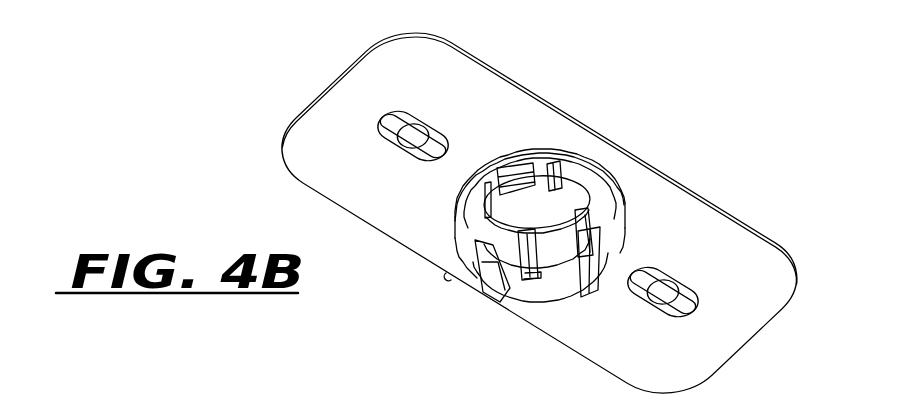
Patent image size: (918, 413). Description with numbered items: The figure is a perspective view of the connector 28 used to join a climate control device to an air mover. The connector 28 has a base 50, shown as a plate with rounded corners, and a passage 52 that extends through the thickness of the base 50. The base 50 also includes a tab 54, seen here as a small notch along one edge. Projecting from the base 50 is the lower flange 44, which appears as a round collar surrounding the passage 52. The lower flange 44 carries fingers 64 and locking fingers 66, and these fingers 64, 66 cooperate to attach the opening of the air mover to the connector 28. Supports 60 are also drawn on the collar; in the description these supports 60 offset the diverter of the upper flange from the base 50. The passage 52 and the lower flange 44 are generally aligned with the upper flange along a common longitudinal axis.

The connector 28 is at (333, 88).
The lower flange 44 is at (575, 160).
The base 50 is at (461, 88).
The passage 52 is at (507, 303).
The tab 54 is at (463, 292).
The supports 60 is at (604, 238).
The fingers 64 is at (592, 192).
The locking fingers 66 is at (515, 172).